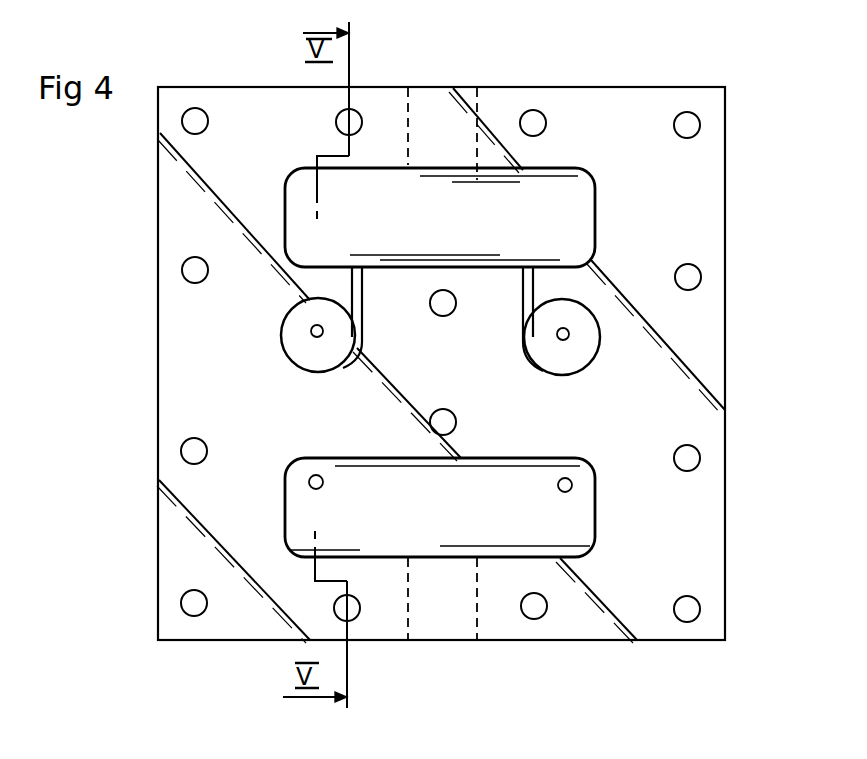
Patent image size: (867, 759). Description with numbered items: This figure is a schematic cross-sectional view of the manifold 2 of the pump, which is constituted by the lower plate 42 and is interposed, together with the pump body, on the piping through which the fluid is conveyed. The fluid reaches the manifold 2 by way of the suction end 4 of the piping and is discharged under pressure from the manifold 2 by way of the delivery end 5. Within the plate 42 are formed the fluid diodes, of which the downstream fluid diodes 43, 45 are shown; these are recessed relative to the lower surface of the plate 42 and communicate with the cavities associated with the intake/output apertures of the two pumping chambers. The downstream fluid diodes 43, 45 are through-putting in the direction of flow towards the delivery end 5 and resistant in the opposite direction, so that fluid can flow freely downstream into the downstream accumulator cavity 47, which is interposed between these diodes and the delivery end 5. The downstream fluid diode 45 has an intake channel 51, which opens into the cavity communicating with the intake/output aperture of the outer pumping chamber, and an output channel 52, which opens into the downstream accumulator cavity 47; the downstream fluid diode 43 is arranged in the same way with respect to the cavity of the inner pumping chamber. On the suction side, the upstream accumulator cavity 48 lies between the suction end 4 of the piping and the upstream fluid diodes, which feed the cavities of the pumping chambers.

The manifold 2 is at (124, 214).
The suction end 4 is at (432, 640).
The delivery end 5 is at (438, 103).
The lower plate 42 is at (680, 397).
The downstream fluid diode 43 is at (582, 322).
The downstream fluid diode 45 is at (287, 320).
The downstream accumulator cavity 47 is at (525, 168).
The upstream accumulator cavity 48 is at (578, 512).
The intake channel 51 is at (316, 337).
The output channel 52 is at (366, 305).